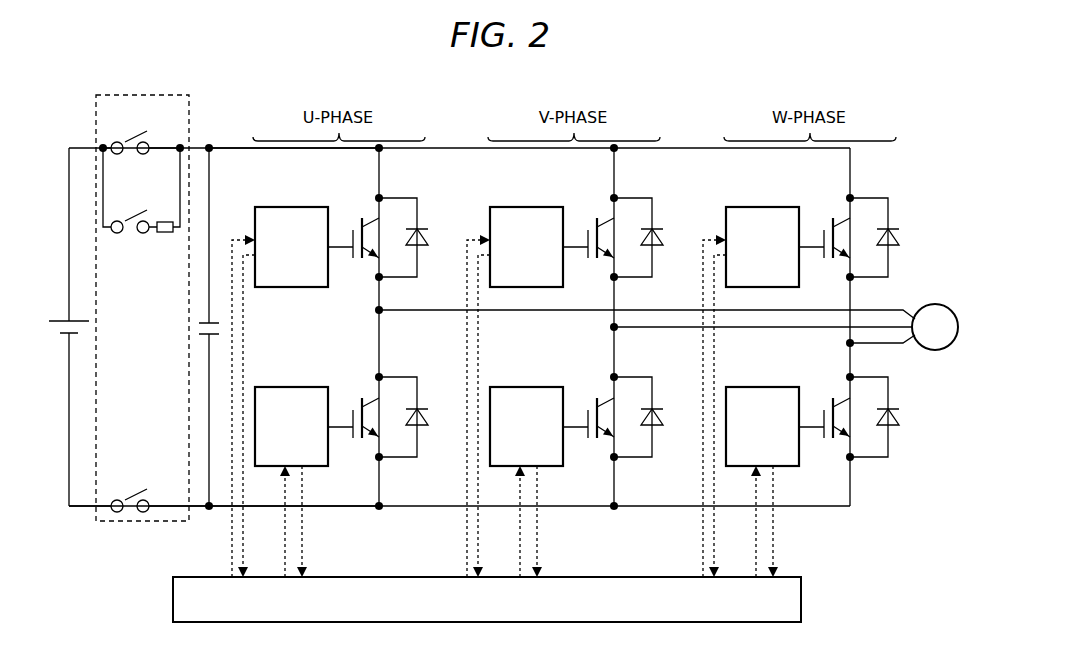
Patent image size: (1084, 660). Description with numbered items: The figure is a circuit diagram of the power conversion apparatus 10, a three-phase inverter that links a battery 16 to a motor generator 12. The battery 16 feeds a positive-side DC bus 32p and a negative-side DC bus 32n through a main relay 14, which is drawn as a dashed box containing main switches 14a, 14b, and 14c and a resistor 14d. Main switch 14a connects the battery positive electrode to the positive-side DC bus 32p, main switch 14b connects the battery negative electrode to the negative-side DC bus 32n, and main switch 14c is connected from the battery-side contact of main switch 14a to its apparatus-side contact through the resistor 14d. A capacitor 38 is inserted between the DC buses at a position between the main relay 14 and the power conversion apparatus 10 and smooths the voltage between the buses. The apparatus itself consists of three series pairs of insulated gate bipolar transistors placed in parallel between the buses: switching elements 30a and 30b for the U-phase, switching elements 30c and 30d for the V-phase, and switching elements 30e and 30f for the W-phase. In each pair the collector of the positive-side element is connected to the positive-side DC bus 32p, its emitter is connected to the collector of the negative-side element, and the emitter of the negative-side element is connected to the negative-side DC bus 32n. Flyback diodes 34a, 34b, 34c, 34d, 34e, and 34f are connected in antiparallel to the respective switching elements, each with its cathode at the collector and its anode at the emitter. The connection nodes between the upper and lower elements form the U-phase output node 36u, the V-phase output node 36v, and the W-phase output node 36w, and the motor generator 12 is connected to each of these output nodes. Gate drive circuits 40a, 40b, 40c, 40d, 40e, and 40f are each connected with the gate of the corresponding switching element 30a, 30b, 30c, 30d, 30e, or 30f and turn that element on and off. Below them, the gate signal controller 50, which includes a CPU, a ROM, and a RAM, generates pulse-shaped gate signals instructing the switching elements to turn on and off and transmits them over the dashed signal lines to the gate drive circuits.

The power conversion apparatus 10 is at (497, 114).
The motor generator 12 is at (934, 304).
The main relay 14 is at (152, 93).
The main switch 14a is at (141, 136).
The main switch 14b is at (141, 493).
The main switch 14c is at (141, 216).
The resistor 14d is at (165, 233).
The battery 16 is at (65, 319).
The switching element 30a is at (355, 233).
The switching element 30b is at (345, 430).
The switching element 30c is at (595, 219).
The switching element 30d is at (595, 438).
The switching element 30e is at (831, 219).
The switching element 30f is at (831, 438).
The positive-side DC bus 32p is at (229, 145).
The negative-side DC bus 32n is at (218, 508).
The flyback diode 34a is at (421, 229).
The flyback diode 34b is at (421, 410).
The flyback diode 34c is at (661, 236).
The flyback diode 34d is at (662, 417).
The flyback diode 34e is at (898, 236).
The flyback diode 34f is at (896, 417).
The U-phase output node 36u is at (374, 310).
The V-phase output node 36v is at (610, 327).
The W-phase output node 36w is at (846, 343).
The capacitor 38 is at (212, 319).
The gate drive circuit 40a is at (263, 207).
The gate drive circuit 40b is at (273, 387).
The gate drive circuit 40c is at (515, 224).
The gate drive circuit 40d is at (531, 409).
The gate drive circuit 40e is at (751, 224).
The gate drive circuit 40f is at (765, 409).
The gate signal controller 50 is at (802, 598).